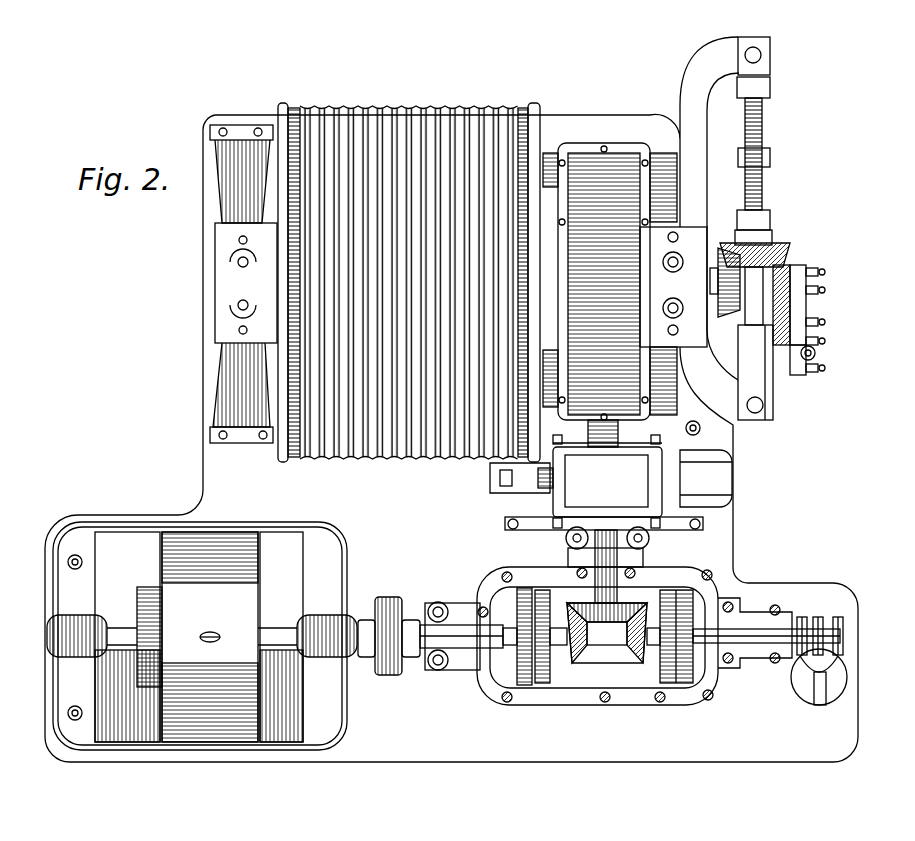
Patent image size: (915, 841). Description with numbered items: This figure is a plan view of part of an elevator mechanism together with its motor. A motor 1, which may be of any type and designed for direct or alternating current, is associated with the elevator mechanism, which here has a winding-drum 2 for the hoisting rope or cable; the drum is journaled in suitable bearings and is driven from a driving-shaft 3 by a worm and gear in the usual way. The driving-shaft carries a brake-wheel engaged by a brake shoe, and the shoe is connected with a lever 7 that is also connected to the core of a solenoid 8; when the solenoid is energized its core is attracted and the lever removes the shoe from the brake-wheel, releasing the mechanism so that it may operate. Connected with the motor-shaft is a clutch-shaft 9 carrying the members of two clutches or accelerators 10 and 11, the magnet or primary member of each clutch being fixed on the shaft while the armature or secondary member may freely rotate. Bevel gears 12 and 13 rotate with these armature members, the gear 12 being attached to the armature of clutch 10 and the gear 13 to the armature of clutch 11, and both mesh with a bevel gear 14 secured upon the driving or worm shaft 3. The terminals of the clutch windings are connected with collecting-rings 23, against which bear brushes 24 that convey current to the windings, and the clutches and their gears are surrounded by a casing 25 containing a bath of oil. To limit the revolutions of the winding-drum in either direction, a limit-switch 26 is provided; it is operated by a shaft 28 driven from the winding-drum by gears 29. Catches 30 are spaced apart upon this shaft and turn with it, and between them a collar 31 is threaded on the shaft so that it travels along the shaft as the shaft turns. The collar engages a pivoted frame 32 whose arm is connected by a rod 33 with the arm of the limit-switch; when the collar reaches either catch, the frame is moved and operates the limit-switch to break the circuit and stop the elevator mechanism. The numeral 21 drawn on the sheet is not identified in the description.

The motor 1 is at (222, 723).
The winding-drum 2 is at (403, 108).
The driving-shaft 3 is at (618, 545).
The lever 7 is at (500, 478).
The solenoid 8 is at (618, 482).
The clutch-shaft 9 is at (750, 635).
The clutch 10 is at (532, 687).
The clutch 11 is at (683, 683).
The bevel gear 12 is at (583, 657).
The bevel gear 13 is at (607, 653).
The bevel gear 14 is at (590, 593).
The resistance 21 is at (808, 310).
The collecting-rings 23 is at (838, 618).
The brushes 24 is at (840, 657).
The casing 25 is at (520, 693).
The limit-switch 26 is at (790, 335).
The shaft 28 is at (763, 128).
The gears 29 is at (728, 247).
The catches 30 is at (770, 93).
The collar 31 is at (770, 158).
The pivoted frame 32 is at (770, 74).
The rod 33 is at (815, 354).